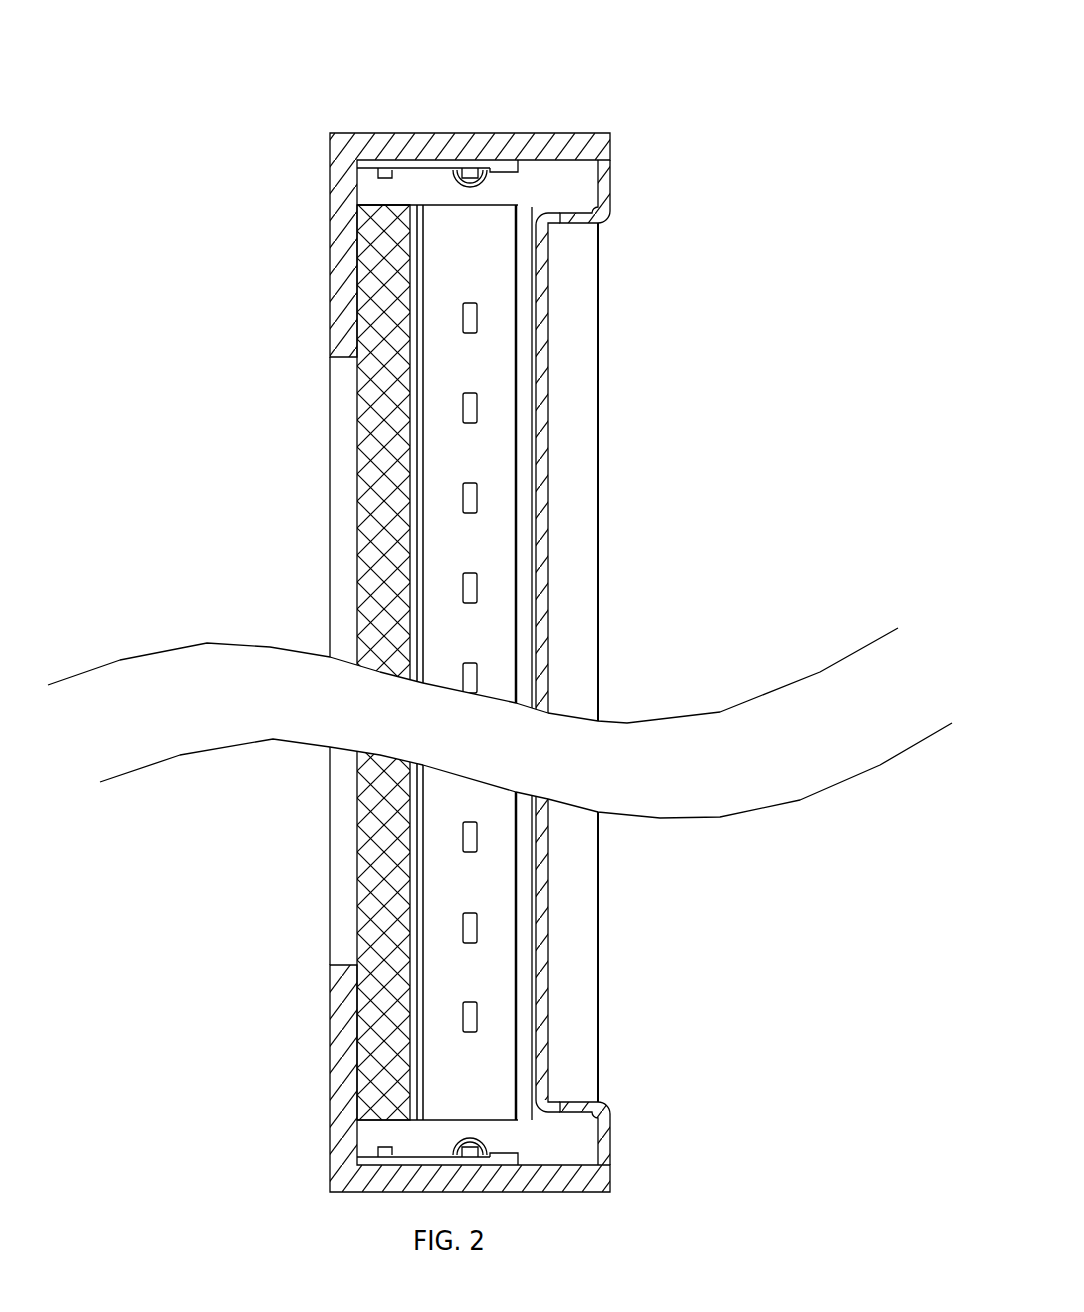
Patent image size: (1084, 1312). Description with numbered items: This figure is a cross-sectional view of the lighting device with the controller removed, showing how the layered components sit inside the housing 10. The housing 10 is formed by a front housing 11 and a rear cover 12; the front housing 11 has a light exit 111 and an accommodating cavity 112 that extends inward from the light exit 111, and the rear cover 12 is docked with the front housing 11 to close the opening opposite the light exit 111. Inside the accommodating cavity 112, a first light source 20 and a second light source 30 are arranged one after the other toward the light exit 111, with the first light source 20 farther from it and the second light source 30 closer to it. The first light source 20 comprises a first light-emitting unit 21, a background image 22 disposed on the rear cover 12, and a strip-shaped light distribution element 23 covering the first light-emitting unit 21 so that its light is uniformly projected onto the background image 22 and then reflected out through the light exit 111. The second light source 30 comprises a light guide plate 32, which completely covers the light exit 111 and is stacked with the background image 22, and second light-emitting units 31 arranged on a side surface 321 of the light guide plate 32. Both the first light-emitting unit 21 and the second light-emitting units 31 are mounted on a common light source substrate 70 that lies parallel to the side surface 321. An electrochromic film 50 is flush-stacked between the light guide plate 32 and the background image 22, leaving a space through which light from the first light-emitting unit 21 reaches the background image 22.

The housing 10 is at (481, 596).
The front housing 11 is at (557, 153).
The rear cover 12 is at (598, 187).
The light exit 111 is at (330, 368).
The accommodating cavity 112 is at (427, 200).
The first light source 20 is at (681, 662).
The first light-emitting unit 21 is at (503, 192).
The background image 22 is at (548, 318).
The light distribution element 23 is at (490, 185).
The second light source 30 is at (311, 584).
The second light-emitting unit 31 is at (378, 170).
The light guide plate 32 is at (357, 220).
The side surface 321 is at (398, 203).
The electrochromic film 50 is at (423, 305).
The light source substrate 70 is at (456, 163).